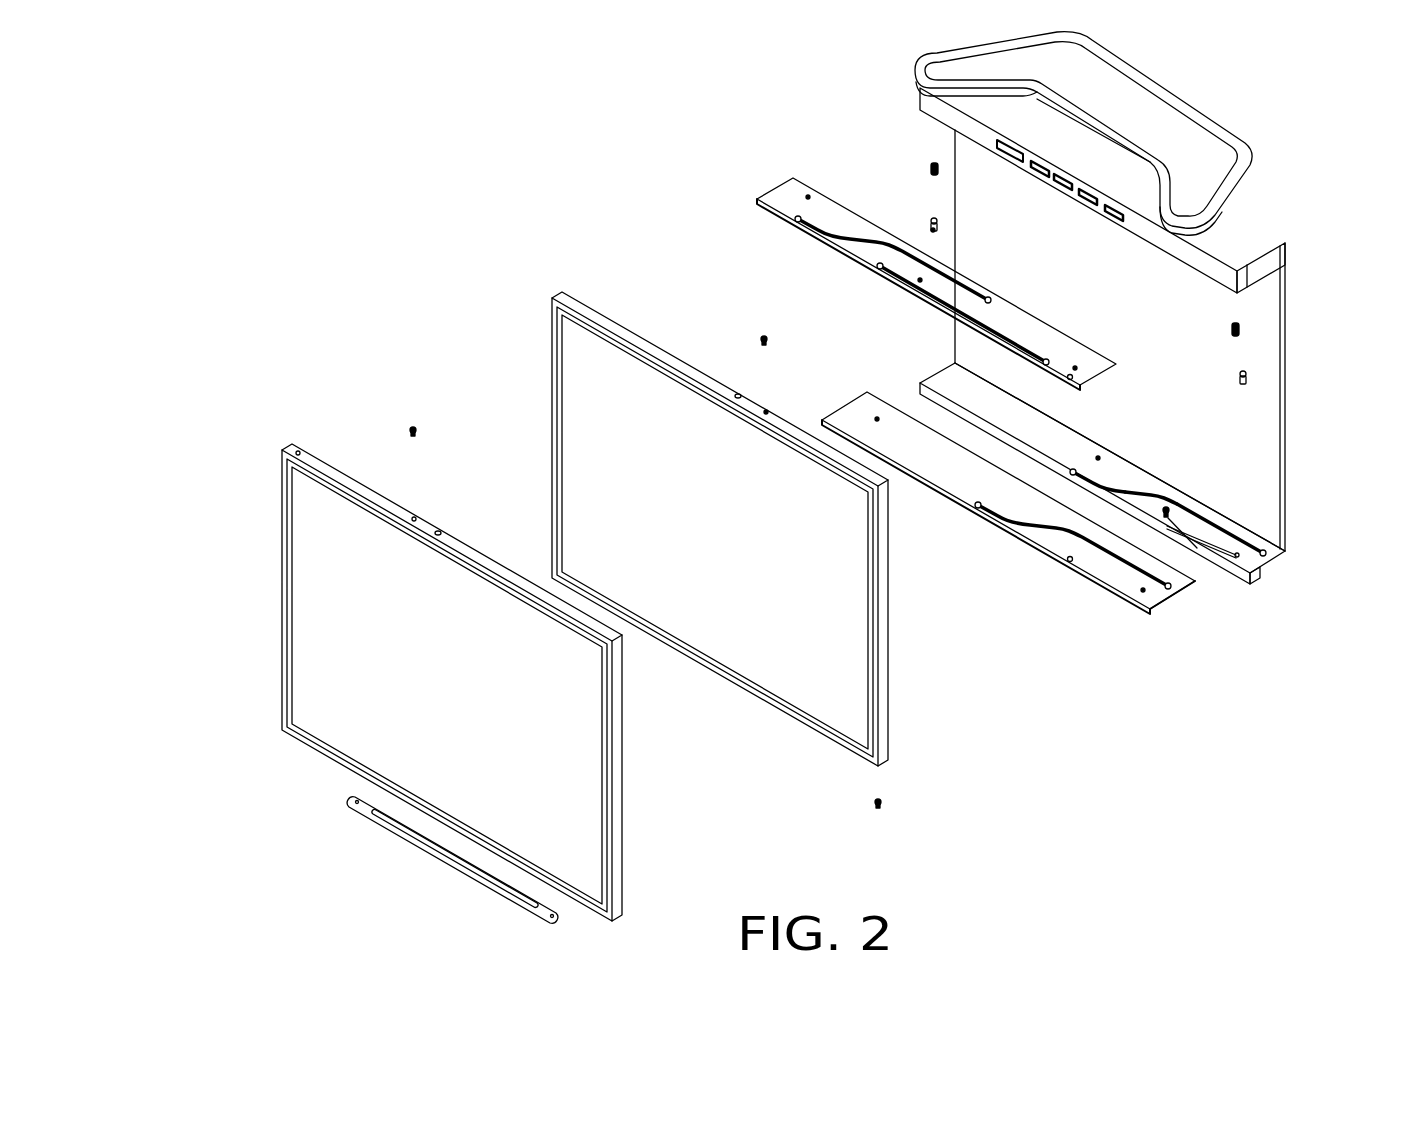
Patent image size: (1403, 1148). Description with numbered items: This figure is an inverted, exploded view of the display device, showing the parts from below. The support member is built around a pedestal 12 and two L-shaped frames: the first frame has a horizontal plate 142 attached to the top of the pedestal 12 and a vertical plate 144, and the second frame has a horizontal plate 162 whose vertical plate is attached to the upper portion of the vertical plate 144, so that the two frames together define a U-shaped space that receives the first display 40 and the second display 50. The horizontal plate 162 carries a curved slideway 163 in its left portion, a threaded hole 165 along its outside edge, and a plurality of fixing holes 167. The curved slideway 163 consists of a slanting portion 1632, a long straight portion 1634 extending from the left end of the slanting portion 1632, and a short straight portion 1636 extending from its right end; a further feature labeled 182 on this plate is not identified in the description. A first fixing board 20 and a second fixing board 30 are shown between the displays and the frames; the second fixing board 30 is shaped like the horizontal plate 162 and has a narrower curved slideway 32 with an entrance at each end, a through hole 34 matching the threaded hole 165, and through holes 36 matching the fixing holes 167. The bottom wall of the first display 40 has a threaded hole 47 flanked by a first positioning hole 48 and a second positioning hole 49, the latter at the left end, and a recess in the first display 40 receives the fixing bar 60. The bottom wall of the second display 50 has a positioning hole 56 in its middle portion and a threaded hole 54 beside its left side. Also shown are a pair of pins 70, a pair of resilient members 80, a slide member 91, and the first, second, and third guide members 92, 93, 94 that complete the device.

The pedestal 12 is at (1190, 156).
The horizontal plate 142 is at (1245, 246).
The vertical plate 144 is at (1255, 306).
The first fixing board 20 is at (790, 198).
The second fixing board 30 is at (1008, 531).
The curved slideway 32 is at (1157, 592).
The through hole 34 is at (1068, 562).
The through holes 36 is at (1000, 493).
The first display 40 is at (276, 530).
The threaded hole 47 is at (414, 516).
The first positioning hole 48 is at (439, 531).
The second positioning hole 49 is at (296, 450).
The second display 50 is at (542, 347).
The threaded hole 54 is at (767, 410).
The positioning hole 56 is at (737, 393).
The fixing bar 60 is at (348, 804).
The pins 70 is at (934, 217).
The resilient members 80 is at (935, 163).
The slide member 91 is at (1250, 564).
The first guide member 92 is at (416, 428).
The second guide member 93 is at (765, 336).
The third guide member 94 is at (882, 801).
The horizontal plate 162 is at (1149, 507).
The curved slideway 163 is at (1172, 463).
The slanting portion 1632 is at (1178, 460).
The long straight portion 1634 is at (1220, 520).
The short straight portion 1636 is at (1090, 478).
The threaded hole 165 is at (1197, 548).
The fixing holes 167 is at (1240, 554).
The slot of bottom flange 182 is at (1250, 540).